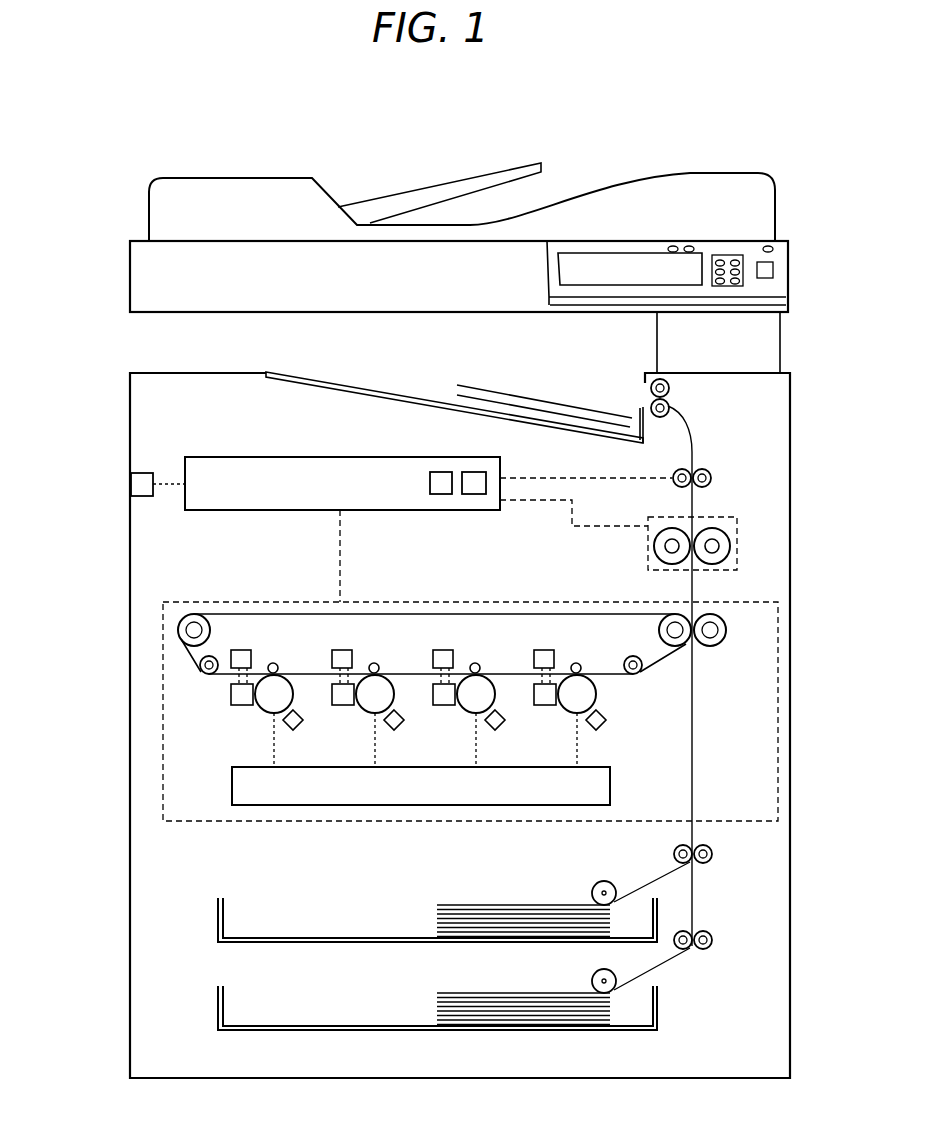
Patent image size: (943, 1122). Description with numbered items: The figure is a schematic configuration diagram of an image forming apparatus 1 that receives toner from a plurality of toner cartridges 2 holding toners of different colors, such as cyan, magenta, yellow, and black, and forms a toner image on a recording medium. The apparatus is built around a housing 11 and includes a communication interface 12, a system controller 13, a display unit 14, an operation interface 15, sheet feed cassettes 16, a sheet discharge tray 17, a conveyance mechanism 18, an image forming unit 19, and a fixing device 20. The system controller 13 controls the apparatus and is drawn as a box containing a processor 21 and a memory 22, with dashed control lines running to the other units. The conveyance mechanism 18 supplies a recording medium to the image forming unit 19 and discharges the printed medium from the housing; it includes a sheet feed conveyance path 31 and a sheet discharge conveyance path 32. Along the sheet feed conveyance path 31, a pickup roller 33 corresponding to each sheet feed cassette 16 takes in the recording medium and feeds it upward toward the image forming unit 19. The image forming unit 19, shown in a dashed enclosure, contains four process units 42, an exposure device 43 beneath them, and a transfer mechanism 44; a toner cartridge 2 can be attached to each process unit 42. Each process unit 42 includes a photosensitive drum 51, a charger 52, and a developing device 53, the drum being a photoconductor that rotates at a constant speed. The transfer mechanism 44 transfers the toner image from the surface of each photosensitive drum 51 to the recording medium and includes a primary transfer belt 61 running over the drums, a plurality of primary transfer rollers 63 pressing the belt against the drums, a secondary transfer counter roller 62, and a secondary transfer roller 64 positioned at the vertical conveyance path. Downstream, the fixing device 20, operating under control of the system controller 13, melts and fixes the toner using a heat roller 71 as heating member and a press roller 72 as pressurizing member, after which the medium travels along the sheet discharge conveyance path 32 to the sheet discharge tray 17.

The image forming apparatus 1 is at (427, 146).
The toner cartridge 2 is at (241, 650).
The housing 11 is at (130, 388).
The communication interface 12 is at (148, 473).
The system controller 13 is at (321, 457).
The display unit 14 is at (590, 252).
The operation interface 15 is at (729, 254).
The sheet feed cassette 16 is at (218, 914).
The sheet discharge tray 17 is at (349, 372).
The conveyance mechanism 18 is at (720, 449).
The image forming unit 19 is at (578, 602).
The fixing device 20 is at (740, 545).
The processor 21 is at (441, 495).
The memory 22 is at (474, 495).
The sheet feed conveyance path 31 is at (700, 846).
The sheet discharge conveyance path 32 is at (698, 432).
The pickup roller 33 is at (592, 888).
The process unit 42 is at (262, 724).
The exposure device 43 is at (232, 781).
The transfer mechanism 44 is at (413, 597).
The photosensitive drum 51 is at (284, 682).
The charger 52 is at (298, 731).
The developing device 53 is at (237, 705).
The primary transfer belt 61 is at (537, 612).
The secondary transfer counter roller 62 is at (661, 640).
The primary transfer roller 63 is at (272, 663).
The secondary transfer roller 64 is at (726, 634).
The heat roller 71 is at (656, 527).
The press roller 72 is at (724, 528).